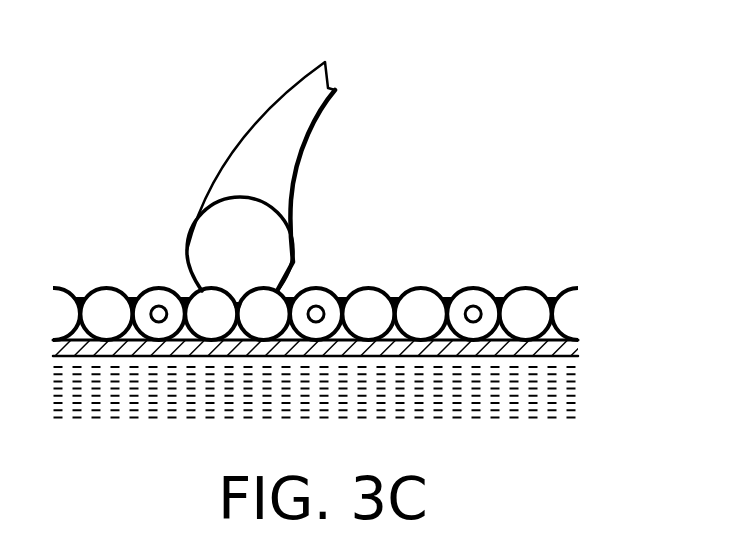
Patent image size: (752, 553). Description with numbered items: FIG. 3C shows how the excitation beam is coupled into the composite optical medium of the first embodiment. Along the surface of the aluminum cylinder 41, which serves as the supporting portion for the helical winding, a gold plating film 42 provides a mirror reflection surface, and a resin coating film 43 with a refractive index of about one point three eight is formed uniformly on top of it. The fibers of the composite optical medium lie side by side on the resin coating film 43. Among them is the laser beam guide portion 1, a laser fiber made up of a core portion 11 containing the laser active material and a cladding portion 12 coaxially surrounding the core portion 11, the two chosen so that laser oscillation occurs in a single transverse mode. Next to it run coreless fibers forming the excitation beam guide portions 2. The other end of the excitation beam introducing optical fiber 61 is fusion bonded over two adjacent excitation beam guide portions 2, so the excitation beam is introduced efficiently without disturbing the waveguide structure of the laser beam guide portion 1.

The laser beam guide portion 1 is at (144, 288).
The core portion 11 is at (495, 292).
The cladding portion 12 is at (477, 308).
The excitation beam guide portion 2 is at (191, 290).
The excitation beam introducing optical fiber 61 is at (295, 127).
The resin coating film 43 is at (569, 338).
The gold plating film 42 is at (583, 358).
The aluminum cylinder 41 is at (566, 381).